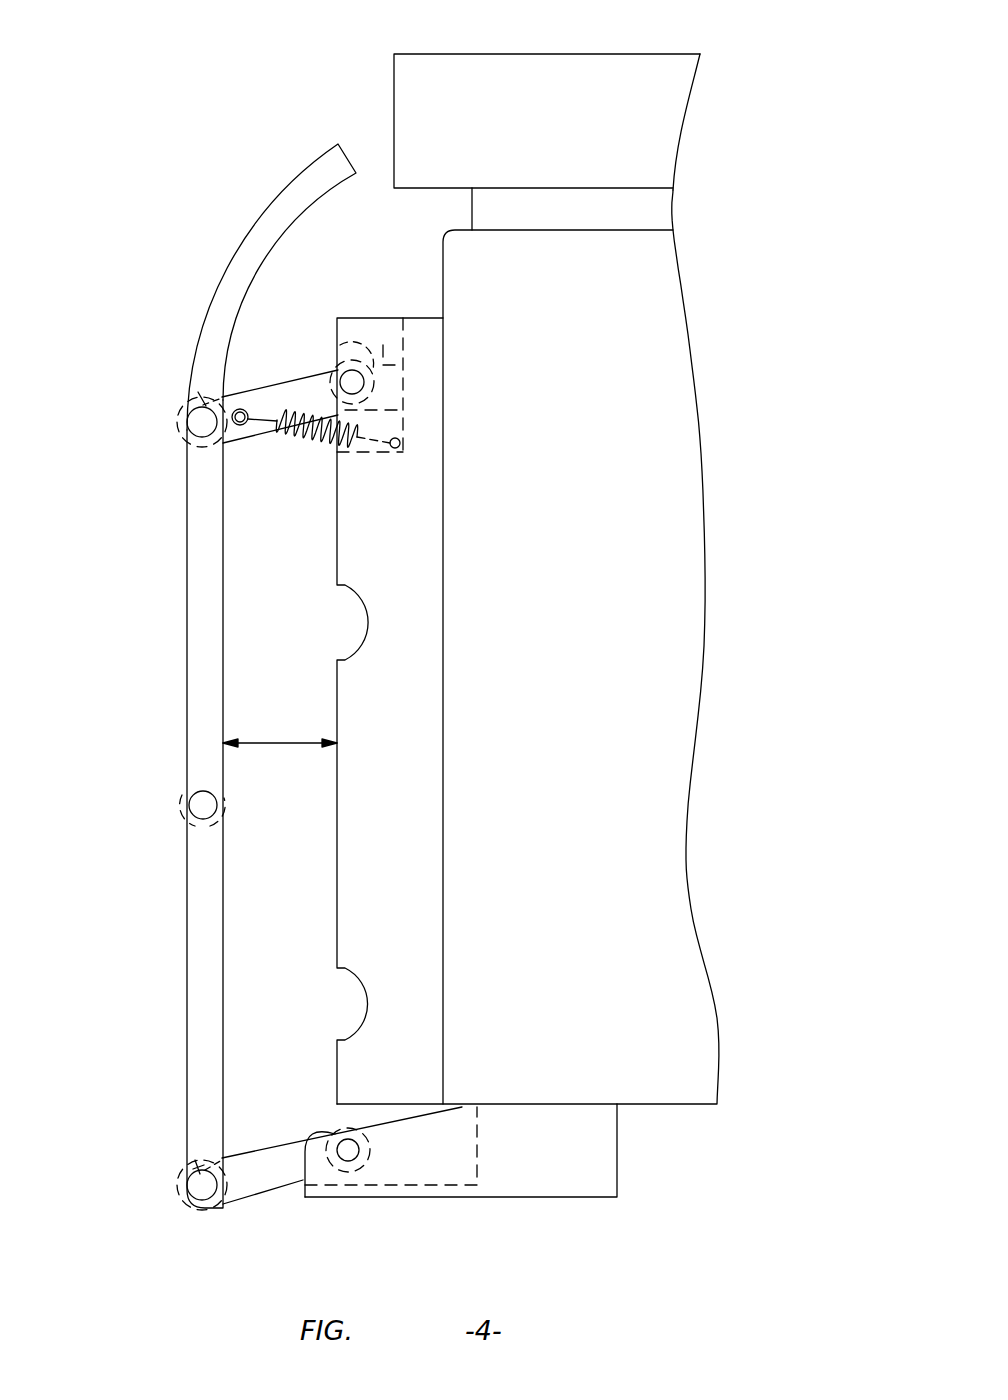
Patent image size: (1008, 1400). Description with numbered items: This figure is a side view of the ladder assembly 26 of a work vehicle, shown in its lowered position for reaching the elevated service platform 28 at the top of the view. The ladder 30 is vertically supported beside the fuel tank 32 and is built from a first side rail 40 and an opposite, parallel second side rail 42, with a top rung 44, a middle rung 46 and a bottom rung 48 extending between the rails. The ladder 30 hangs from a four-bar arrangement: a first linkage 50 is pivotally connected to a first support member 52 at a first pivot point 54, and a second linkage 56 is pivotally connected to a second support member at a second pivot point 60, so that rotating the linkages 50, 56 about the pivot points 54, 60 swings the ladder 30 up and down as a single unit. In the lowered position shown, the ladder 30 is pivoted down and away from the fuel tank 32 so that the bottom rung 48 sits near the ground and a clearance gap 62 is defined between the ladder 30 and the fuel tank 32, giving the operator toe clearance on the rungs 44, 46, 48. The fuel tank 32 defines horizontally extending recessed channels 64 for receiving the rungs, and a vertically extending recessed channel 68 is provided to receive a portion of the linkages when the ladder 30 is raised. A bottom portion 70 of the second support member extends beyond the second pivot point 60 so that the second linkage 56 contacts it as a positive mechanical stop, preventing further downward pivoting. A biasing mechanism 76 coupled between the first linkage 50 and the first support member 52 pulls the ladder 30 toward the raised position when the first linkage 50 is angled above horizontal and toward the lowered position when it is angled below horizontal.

The ladder assembly 26 is at (190, 121).
The service platform 28 is at (582, 54).
The ladder 30 is at (161, 589).
The fuel tank 32 is at (677, 475).
The first side rail 40 is at (238, 260).
The second side rail 42 is at (271, 287).
The top rung 44 is at (193, 385).
The middle rung 46 is at (203, 790).
The bottom rung 48 is at (193, 1150).
The first linkage 50 is at (245, 437).
The first support member 52 is at (380, 337).
The first pivot point 54 is at (350, 360).
The second linkage 56 is at (252, 1178).
The second pivot point 60 is at (348, 1142).
The clearance gap 62 is at (270, 742).
The horizontally extending recessed channel 64 is at (363, 612).
The mounting bracket 68 is at (387, 313).
The bottom portion of the second support member 70 is at (305, 1200).
The biasing mechanism 76 is at (300, 440).